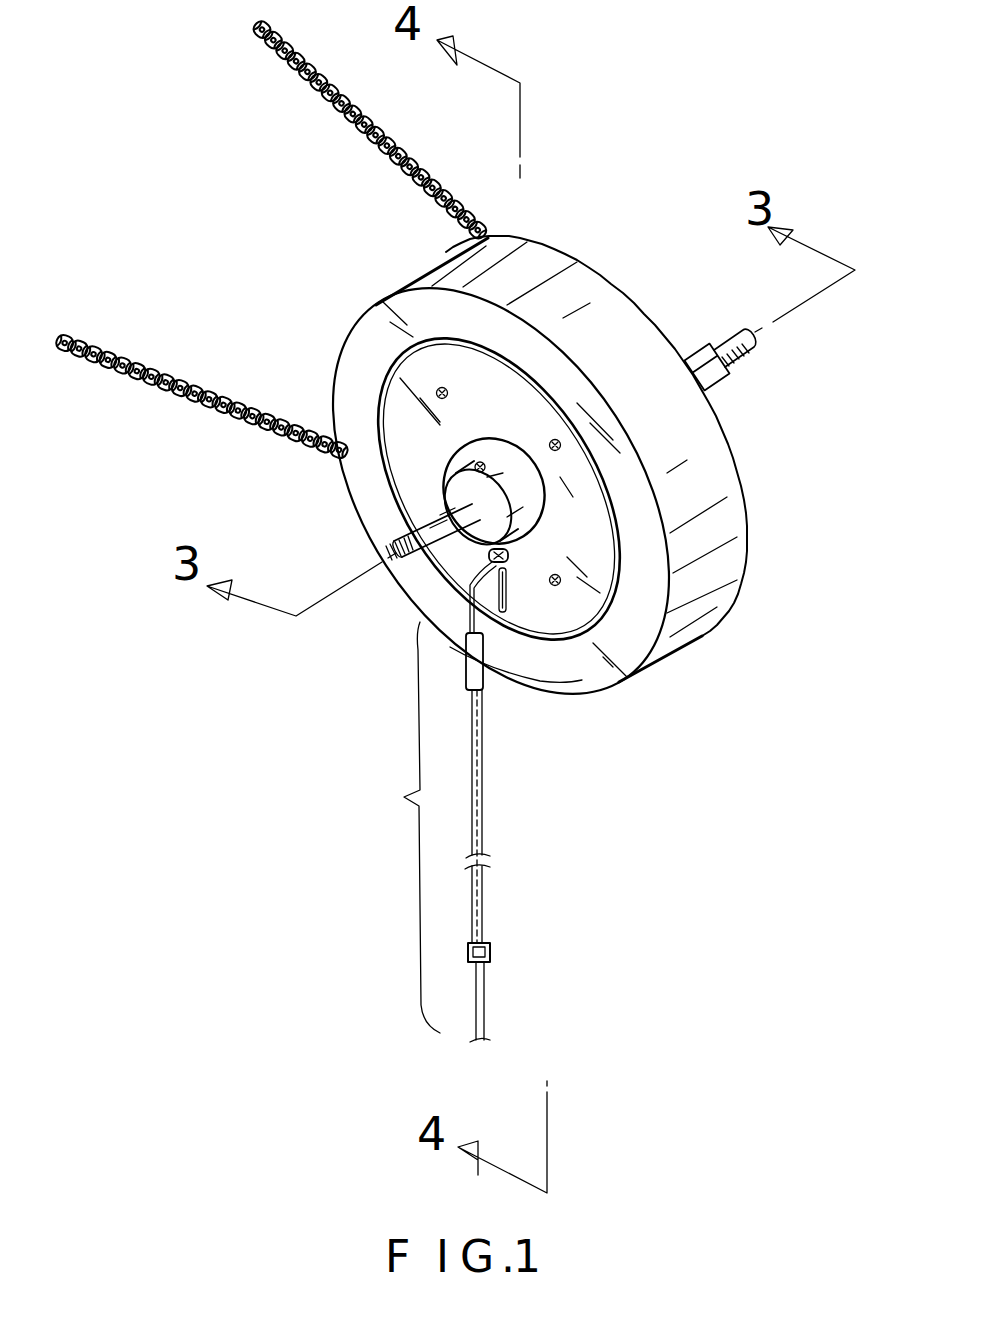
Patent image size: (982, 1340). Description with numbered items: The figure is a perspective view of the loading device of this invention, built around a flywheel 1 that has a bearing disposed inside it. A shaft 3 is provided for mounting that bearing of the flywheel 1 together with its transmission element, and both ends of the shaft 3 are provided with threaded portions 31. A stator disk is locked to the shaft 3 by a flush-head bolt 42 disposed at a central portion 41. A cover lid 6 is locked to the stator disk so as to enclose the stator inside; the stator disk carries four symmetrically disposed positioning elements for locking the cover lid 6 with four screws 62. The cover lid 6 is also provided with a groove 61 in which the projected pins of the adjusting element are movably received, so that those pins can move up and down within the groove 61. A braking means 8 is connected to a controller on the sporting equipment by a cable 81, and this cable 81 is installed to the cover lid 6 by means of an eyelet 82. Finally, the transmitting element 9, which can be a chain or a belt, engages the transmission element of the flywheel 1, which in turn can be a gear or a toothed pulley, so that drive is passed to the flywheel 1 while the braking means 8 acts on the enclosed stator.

The flywheel 1 is at (723, 521).
The shaft 3 is at (412, 503).
The threaded portions 31 is at (745, 352).
The central portion 41 is at (542, 512).
The flush-head bolt 42 is at (479, 460).
The cover lid 6 is at (595, 600).
The groove 61 is at (512, 563).
The screws 62 is at (561, 443).
The braking means 8 is at (440, 797).
The cable 81 is at (480, 995).
The eyelet 82 is at (588, 682).
The transmitting element 9 is at (203, 385).